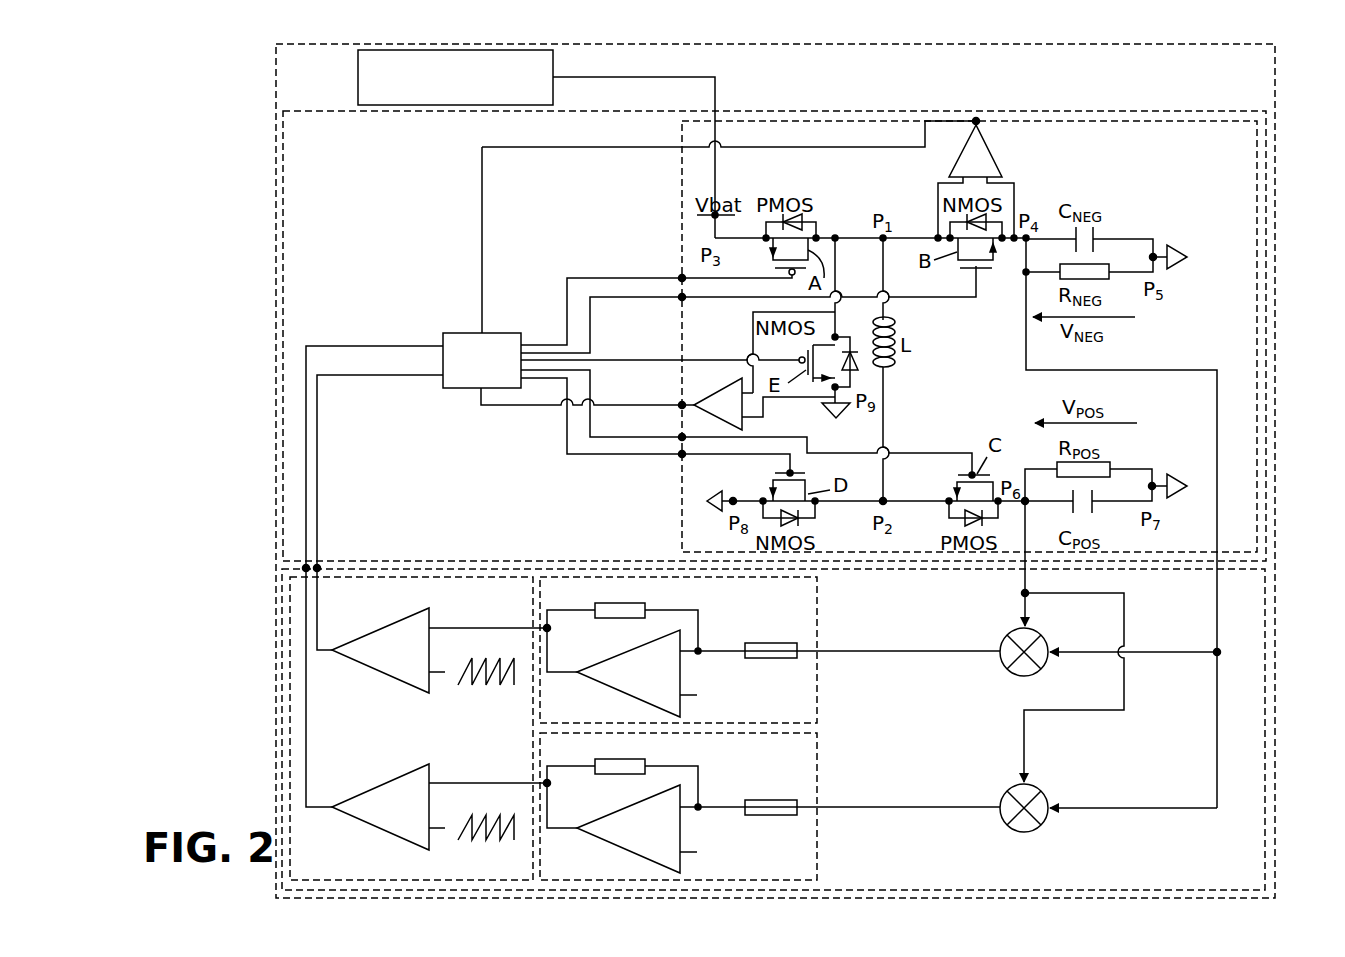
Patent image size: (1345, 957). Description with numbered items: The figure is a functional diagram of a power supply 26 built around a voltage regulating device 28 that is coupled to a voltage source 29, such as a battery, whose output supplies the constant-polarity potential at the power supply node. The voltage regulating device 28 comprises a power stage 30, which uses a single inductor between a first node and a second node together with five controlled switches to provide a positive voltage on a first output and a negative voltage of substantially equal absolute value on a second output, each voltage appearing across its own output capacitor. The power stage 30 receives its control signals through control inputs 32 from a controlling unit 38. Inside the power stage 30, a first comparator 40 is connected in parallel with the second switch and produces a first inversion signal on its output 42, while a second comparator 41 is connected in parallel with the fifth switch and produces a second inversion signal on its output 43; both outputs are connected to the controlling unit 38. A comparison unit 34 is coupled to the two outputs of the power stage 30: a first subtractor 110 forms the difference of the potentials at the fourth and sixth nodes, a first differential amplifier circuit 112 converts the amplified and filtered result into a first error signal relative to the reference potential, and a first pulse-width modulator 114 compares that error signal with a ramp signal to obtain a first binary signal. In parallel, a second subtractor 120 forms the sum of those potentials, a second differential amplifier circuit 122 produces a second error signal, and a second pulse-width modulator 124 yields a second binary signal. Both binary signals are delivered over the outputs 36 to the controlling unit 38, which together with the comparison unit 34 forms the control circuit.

The power supply 26 is at (274, 83).
The voltage regulating device 28 is at (1206, 111).
The voltage source 29 is at (553, 68).
The power stage 30 is at (1258, 193).
The control inputs 32 is at (681, 276).
The comparison unit 34 is at (1264, 614).
The outputs 36 is at (304, 566).
The controlling unit 38 is at (465, 333).
The first comparator 40 is at (995, 159).
The second comparator 41 is at (736, 384).
The output of the first comparator 42 is at (977, 119).
The output of the second comparator 43 is at (680, 403).
The first subtractor 110 is at (1000, 662).
The first differential amplifier circuit 112 is at (817, 620).
The first pulse-width modulator 114 is at (358, 663).
The second subtractor 120 is at (1000, 797).
The second differential amplifier circuit 122 is at (817, 766).
The second pulse-width modulator 124 is at (387, 779).